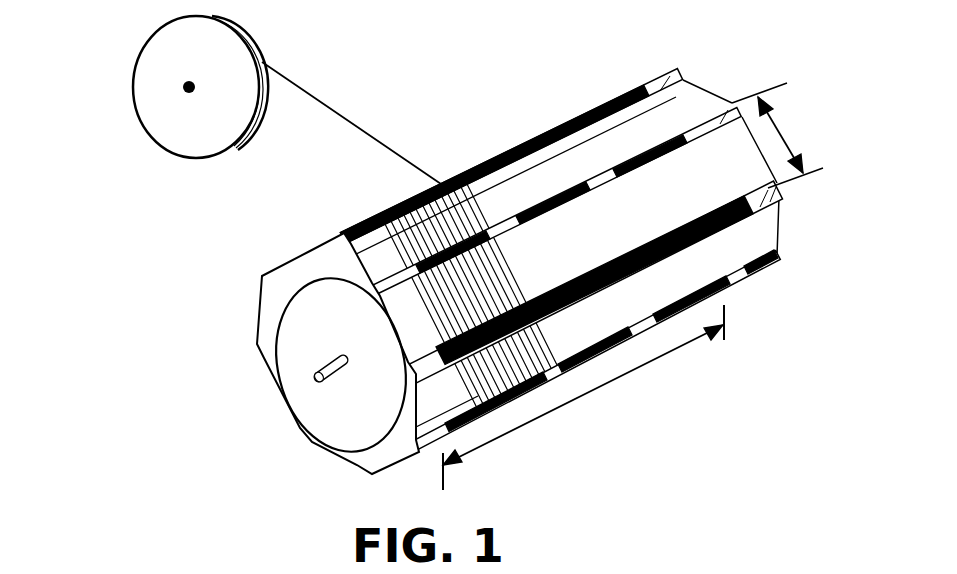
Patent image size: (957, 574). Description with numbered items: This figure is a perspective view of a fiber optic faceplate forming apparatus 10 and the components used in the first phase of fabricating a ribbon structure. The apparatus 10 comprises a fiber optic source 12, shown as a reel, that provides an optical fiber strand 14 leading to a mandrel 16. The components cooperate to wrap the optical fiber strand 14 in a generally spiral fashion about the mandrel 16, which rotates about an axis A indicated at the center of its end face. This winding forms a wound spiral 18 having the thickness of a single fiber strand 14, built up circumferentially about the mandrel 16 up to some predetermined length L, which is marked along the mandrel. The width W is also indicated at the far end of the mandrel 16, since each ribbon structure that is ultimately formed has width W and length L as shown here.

The fiber optic faceplate forming apparatus 10 is at (830, 378).
The fiber optic source 12 is at (132, 72).
The optical fiber strand 14 is at (322, 103).
The mandrel 16 is at (262, 320).
The wound spiral 18 is at (467, 173).
The axis A is at (320, 375).
The length L is at (583, 397).
The width W is at (779, 135).